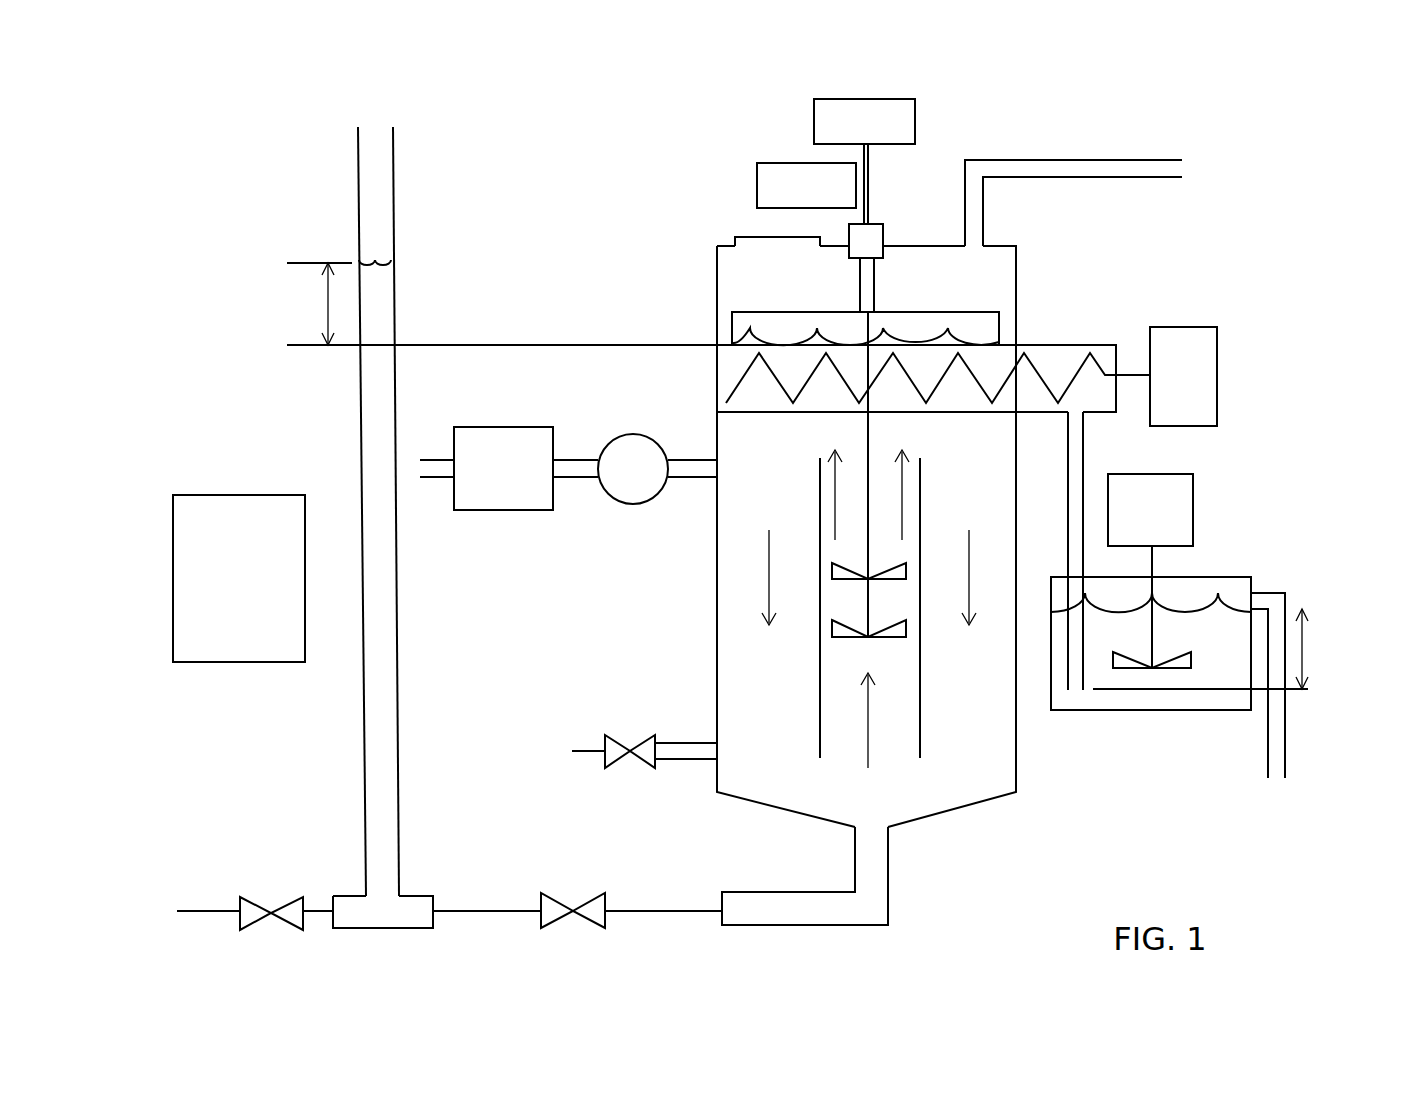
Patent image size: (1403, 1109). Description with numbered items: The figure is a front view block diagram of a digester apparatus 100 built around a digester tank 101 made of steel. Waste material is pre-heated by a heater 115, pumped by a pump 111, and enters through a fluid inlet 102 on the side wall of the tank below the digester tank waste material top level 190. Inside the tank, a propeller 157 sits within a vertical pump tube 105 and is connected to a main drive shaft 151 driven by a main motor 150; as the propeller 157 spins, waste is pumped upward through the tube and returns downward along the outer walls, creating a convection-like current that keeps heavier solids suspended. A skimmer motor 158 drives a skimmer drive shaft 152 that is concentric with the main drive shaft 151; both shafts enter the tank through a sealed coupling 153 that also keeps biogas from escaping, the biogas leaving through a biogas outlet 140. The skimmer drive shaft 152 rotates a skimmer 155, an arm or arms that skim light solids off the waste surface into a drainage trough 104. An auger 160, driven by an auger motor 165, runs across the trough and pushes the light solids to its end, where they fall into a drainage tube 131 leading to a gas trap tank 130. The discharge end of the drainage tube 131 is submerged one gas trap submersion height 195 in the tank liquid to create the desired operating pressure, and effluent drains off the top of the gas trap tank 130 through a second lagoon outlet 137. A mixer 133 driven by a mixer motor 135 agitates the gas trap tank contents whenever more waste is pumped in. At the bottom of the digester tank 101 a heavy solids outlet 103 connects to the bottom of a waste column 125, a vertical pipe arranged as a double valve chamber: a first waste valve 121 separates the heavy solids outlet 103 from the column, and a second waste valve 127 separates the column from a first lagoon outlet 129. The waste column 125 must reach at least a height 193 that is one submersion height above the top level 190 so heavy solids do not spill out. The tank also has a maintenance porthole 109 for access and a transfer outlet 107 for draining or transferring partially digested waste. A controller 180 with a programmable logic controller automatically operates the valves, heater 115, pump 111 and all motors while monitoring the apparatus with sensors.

The digester apparatus 100 is at (240, 157).
The digester tank 101 is at (715, 282).
The fluid inlet 102 is at (700, 458).
The heavy solids outlet 103 is at (855, 858).
The drainage trough 104 is at (1065, 342).
The vertical pump tube 105 is at (817, 525).
The transfer outlet 107 is at (642, 742).
The maintenance porthole 109 is at (737, 240).
The pump 111 is at (623, 432).
The heater 115 is at (483, 480).
The first waste valve 121 is at (563, 905).
The waste column 125 is at (402, 718).
The second waste valve 127 is at (252, 903).
The first lagoon outlet 129 is at (193, 911).
The gas trap tank 130 is at (1102, 712).
The drainage tube 131 is at (1085, 447).
The mixer 133 is at (1125, 670).
The mixer motor 135 is at (1130, 522).
The second lagoon outlet 137 is at (1268, 593).
The biogas outlet 140 is at (1133, 177).
The main motor 150 is at (844, 134).
The main drive shaft 151 is at (868, 448).
The skimmer drive shaft 152 is at (875, 287).
The sealed coupling 153 is at (883, 225).
The skimmer 155 is at (927, 310).
The propeller 157 is at (906, 579).
The skimmer motor 158 is at (786, 197).
The auger 160 is at (1100, 362).
The auger motor 165 is at (1163, 388).
The controller 180 is at (219, 590).
The digester tank waste material top level 190 is at (303, 348).
The height 193 is at (303, 265).
The gas trap submersion height 195 is at (1222, 649).